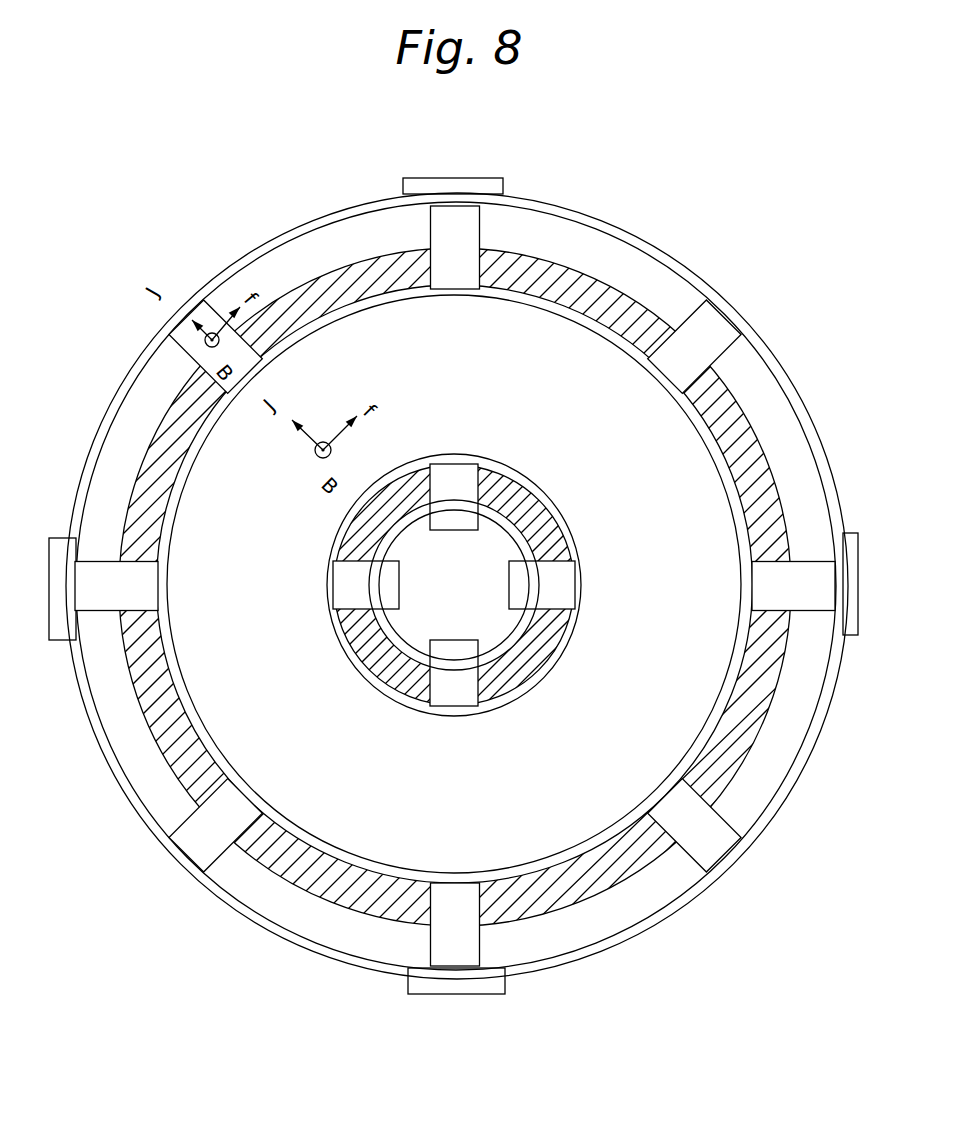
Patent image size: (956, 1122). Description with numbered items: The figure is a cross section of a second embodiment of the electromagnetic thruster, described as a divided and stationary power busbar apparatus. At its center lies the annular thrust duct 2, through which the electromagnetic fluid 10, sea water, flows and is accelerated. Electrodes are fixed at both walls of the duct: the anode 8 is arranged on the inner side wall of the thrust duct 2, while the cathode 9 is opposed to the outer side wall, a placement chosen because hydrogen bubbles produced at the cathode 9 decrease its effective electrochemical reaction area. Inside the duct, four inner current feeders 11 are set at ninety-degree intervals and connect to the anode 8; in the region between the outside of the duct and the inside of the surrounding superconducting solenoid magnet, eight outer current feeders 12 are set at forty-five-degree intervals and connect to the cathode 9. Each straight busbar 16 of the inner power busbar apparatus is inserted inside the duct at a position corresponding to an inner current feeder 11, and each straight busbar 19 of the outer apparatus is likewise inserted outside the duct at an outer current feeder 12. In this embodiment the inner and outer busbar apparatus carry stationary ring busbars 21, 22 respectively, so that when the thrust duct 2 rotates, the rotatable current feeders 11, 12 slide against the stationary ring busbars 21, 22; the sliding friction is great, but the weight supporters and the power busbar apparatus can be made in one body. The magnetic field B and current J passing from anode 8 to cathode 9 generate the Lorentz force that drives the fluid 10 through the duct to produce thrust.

The thrust duct 2 is at (540, 262).
The anode 8 is at (555, 664).
The cathode 9 is at (185, 698).
The electromagnetic fluid 10 is at (468, 355).
The inner current feeder 11 is at (567, 583).
The outer current feeder 12 is at (457, 213).
The straight busbar 16 is at (387, 590).
The straight busbar 19 is at (852, 625).
The ring busbar 21 is at (520, 528).
The ring busbar 22 is at (705, 280).